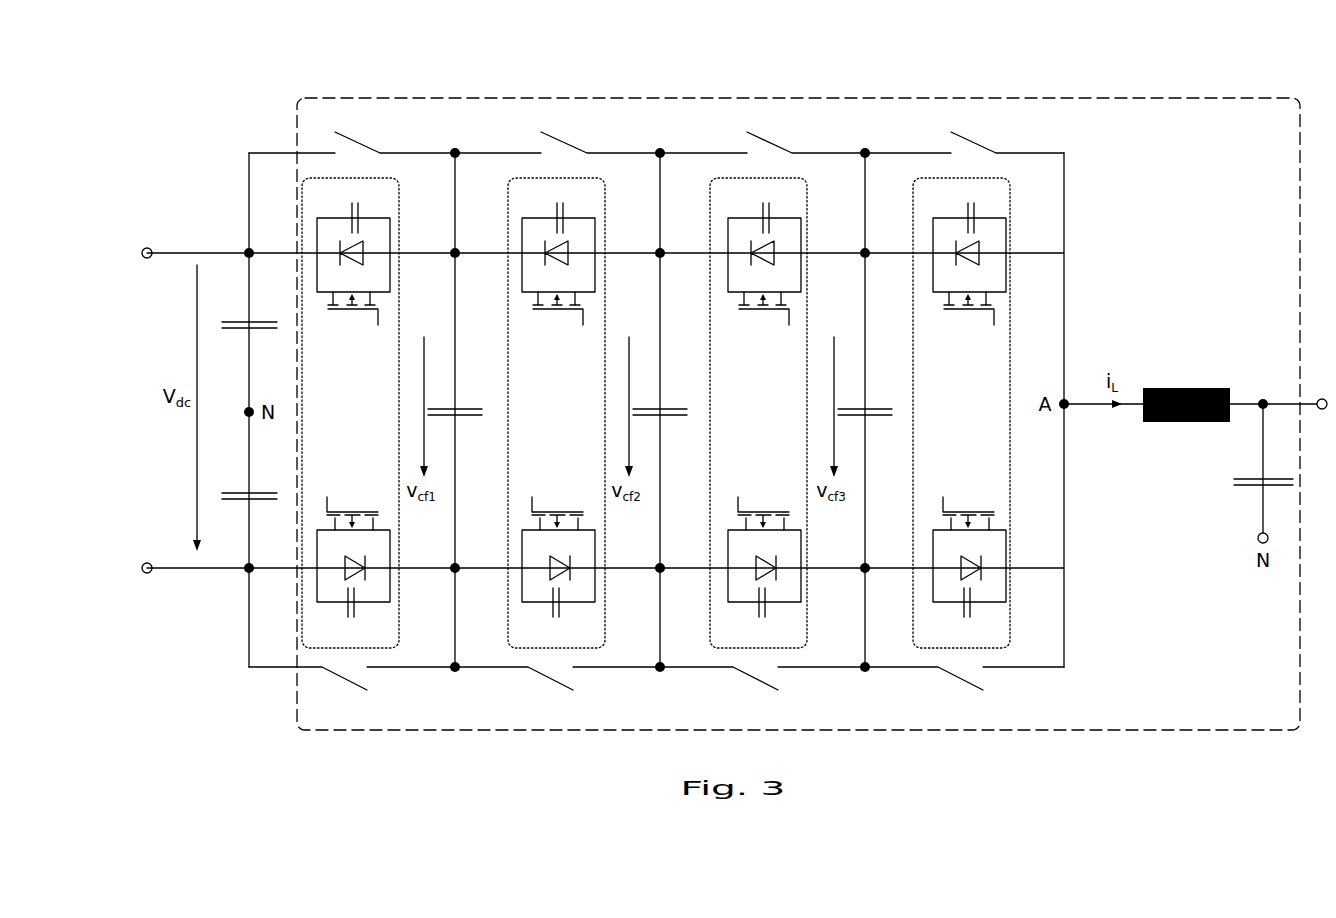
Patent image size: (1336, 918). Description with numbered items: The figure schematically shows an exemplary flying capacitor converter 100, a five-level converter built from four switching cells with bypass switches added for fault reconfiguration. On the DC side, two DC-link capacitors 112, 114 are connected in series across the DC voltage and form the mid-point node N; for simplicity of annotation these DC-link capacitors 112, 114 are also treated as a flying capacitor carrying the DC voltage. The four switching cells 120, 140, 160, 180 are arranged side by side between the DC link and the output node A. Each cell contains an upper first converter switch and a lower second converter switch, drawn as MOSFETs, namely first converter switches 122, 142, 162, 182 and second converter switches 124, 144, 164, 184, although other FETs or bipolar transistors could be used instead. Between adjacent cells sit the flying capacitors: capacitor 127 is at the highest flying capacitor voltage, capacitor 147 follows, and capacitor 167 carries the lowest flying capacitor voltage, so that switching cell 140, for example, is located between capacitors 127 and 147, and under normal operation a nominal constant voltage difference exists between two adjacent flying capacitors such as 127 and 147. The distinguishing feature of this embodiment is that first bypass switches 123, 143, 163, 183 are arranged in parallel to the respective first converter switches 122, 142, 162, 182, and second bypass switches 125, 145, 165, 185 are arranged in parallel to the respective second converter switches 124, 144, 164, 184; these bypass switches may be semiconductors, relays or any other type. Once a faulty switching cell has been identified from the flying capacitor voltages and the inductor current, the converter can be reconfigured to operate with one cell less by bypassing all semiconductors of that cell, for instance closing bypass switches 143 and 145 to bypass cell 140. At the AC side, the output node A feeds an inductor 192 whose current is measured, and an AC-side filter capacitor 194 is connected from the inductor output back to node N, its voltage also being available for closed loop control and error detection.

The flying capacitor converter 100 is at (208, 121).
The DC-link capacitor 112 is at (254, 328).
The DC-link capacitor 114 is at (254, 495).
The switching cell 120 is at (333, 416).
The first converter switch 122 is at (351, 260).
The first bypass switch 123 is at (352, 140).
The second converter switch 124 is at (355, 563).
The second bypass switch 125 is at (352, 681).
The flying capacitor 127 is at (461, 382).
The switching cell 140 is at (539, 416).
The first converter switch 142 is at (556, 260).
The first bypass switch 143 is at (557, 140).
The second converter switch 144 is at (560, 563).
The second bypass switch 145 is at (557, 681).
The flying capacitor 147 is at (666, 382).
The switching cell 160 is at (741, 416).
The first converter switch 162 is at (762, 260).
The first bypass switch 163 is at (762, 140).
The second converter switch 164 is at (766, 563).
The second bypass switch 165 is at (762, 681).
The flying capacitor 167 is at (871, 382).
The switching cell 180 is at (944, 416).
The first converter switch 182 is at (967, 260).
The first bypass switch 183 is at (964, 140).
The second converter switch 184 is at (971, 563).
The second bypass switch 185 is at (964, 681).
The inductor 192 is at (1186, 378).
The AC-side filter capacitor 194 is at (1246, 483).